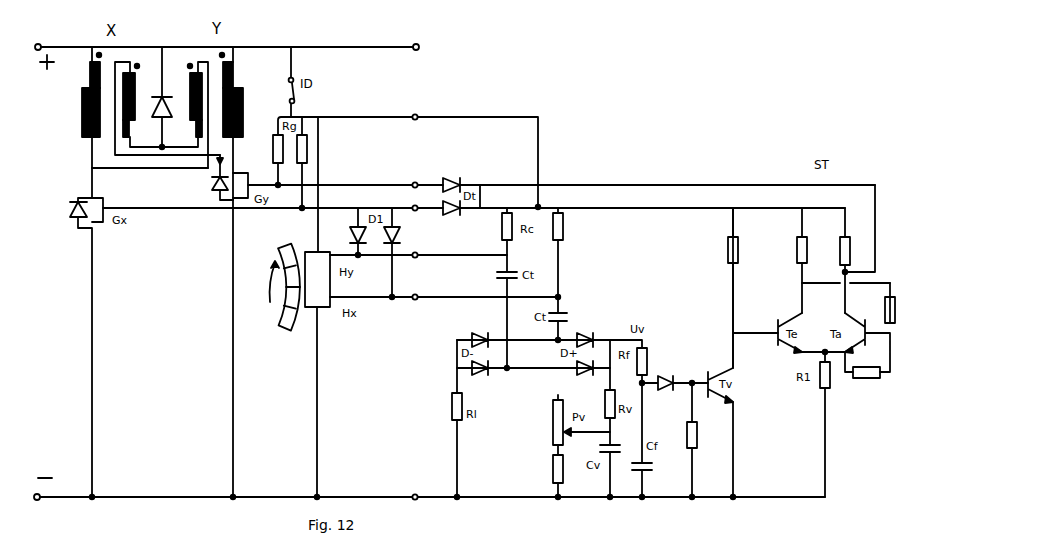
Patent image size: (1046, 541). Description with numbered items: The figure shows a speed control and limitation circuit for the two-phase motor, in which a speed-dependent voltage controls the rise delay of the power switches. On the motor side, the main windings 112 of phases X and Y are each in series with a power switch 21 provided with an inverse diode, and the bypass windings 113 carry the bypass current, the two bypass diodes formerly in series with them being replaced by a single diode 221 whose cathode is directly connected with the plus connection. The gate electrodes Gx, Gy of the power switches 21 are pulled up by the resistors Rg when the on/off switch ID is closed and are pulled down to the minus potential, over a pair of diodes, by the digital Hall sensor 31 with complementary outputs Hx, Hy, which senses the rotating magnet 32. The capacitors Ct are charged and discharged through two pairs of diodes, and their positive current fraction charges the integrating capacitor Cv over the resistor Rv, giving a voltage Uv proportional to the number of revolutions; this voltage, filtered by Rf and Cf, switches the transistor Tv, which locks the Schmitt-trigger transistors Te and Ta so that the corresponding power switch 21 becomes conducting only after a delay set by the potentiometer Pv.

The main winding 112 is at (158, 123).
The bypass winding 113 is at (161, 115).
The bypass diode 221 is at (170, 98).
The power switch 21 is at (159, 326).
The digital Hall sensor 31 is at (317, 374).
The permanent magnet rotor 32 is at (289, 282).